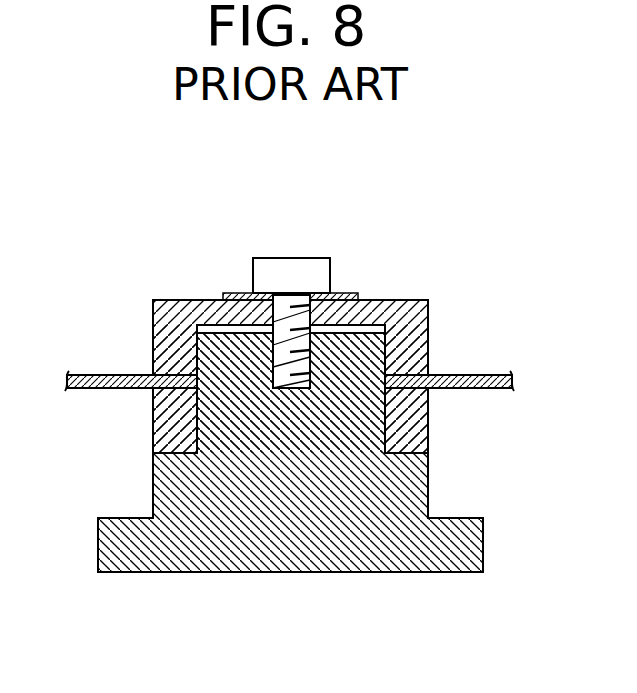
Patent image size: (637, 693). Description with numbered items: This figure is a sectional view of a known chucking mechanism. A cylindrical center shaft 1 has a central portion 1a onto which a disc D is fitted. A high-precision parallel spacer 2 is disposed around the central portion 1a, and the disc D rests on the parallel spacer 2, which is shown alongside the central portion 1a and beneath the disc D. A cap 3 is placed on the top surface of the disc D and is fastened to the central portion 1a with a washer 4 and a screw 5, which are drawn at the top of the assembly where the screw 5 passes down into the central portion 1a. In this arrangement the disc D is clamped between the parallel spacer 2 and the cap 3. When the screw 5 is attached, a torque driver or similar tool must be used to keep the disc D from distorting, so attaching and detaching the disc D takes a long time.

The center shaft 1 is at (428, 485).
The central portion 1a is at (225, 355).
The parallel spacer 2 is at (410, 422).
The cap 3 is at (400, 310).
The washer 4 is at (345, 293).
The screw 5 is at (287, 273).
The disc D is at (473, 376).